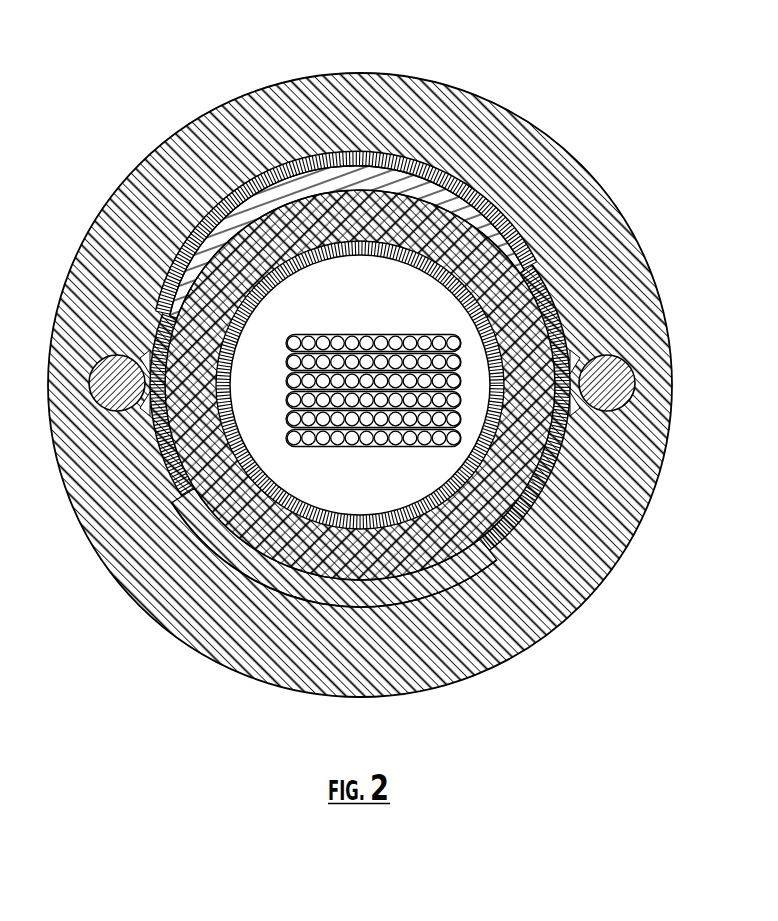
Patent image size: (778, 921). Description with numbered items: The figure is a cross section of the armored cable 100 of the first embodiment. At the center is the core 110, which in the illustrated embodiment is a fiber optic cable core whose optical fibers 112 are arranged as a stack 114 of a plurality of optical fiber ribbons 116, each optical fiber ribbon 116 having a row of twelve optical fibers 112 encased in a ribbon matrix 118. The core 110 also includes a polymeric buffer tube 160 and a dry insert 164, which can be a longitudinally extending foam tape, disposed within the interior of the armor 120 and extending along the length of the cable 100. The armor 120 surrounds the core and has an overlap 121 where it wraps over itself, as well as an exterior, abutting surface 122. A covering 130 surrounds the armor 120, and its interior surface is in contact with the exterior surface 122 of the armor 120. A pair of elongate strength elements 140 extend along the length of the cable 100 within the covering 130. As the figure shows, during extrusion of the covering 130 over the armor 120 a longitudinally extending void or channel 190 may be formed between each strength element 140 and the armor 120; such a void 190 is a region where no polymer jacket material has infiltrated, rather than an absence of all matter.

The cable 100 is at (146, 60).
The core 110 is at (527, 580).
The optical fibers 112 is at (412, 340).
The stack 114 is at (334, 467).
The optical fiber ribbons 116 is at (290, 438).
The ribbon matrix 118 is at (347, 333).
The armor 120 is at (487, 560).
The overlap 121 is at (338, 152).
The exterior, abutting surface 122 is at (520, 235).
The covering 130 is at (187, 580).
The strength elements 140 is at (97, 377).
The buffer tube 160 is at (290, 597).
The dry insert 164 is at (177, 487).
The void or channel 190 is at (147, 410).